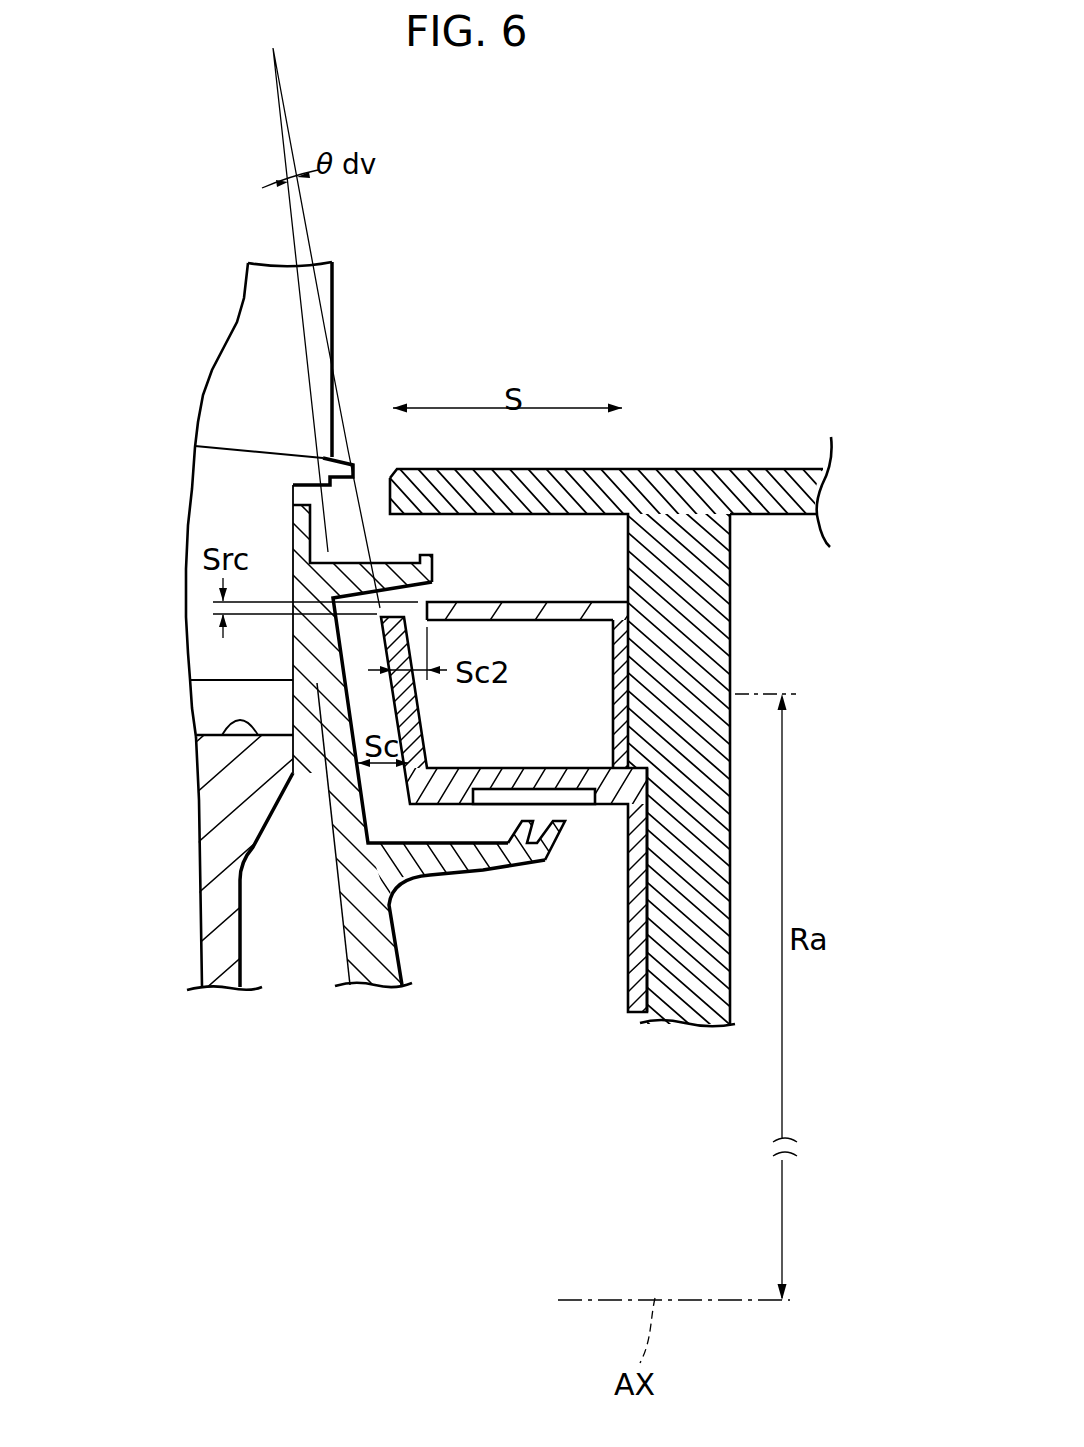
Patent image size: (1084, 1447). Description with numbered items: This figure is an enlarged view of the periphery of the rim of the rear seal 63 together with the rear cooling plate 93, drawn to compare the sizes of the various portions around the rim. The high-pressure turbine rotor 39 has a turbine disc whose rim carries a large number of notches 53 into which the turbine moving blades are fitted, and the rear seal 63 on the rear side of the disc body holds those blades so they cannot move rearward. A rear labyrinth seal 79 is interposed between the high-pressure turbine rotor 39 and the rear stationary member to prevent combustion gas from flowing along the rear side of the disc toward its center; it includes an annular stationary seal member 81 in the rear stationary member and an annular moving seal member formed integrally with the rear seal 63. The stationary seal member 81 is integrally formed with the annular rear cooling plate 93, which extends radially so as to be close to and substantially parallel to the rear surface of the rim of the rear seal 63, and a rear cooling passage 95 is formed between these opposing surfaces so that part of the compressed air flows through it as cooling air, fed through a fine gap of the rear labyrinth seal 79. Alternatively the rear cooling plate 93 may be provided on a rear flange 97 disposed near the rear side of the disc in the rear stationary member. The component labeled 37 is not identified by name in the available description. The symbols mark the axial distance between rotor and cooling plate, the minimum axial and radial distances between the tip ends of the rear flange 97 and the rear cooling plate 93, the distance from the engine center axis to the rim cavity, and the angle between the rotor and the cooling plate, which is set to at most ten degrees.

The casing 37 is at (745, 406).
The high-pressure turbine rotor 39 is at (360, 297).
The notches 53 is at (259, 737).
The rear seal 63 is at (372, 922).
The rear labyrinth seal 79 is at (575, 842).
The stationary seal member 81 is at (543, 770).
The rear cooling plate 93 is at (425, 728).
The rear cooling passage 95 is at (363, 668).
The rear flange 97 is at (580, 612).